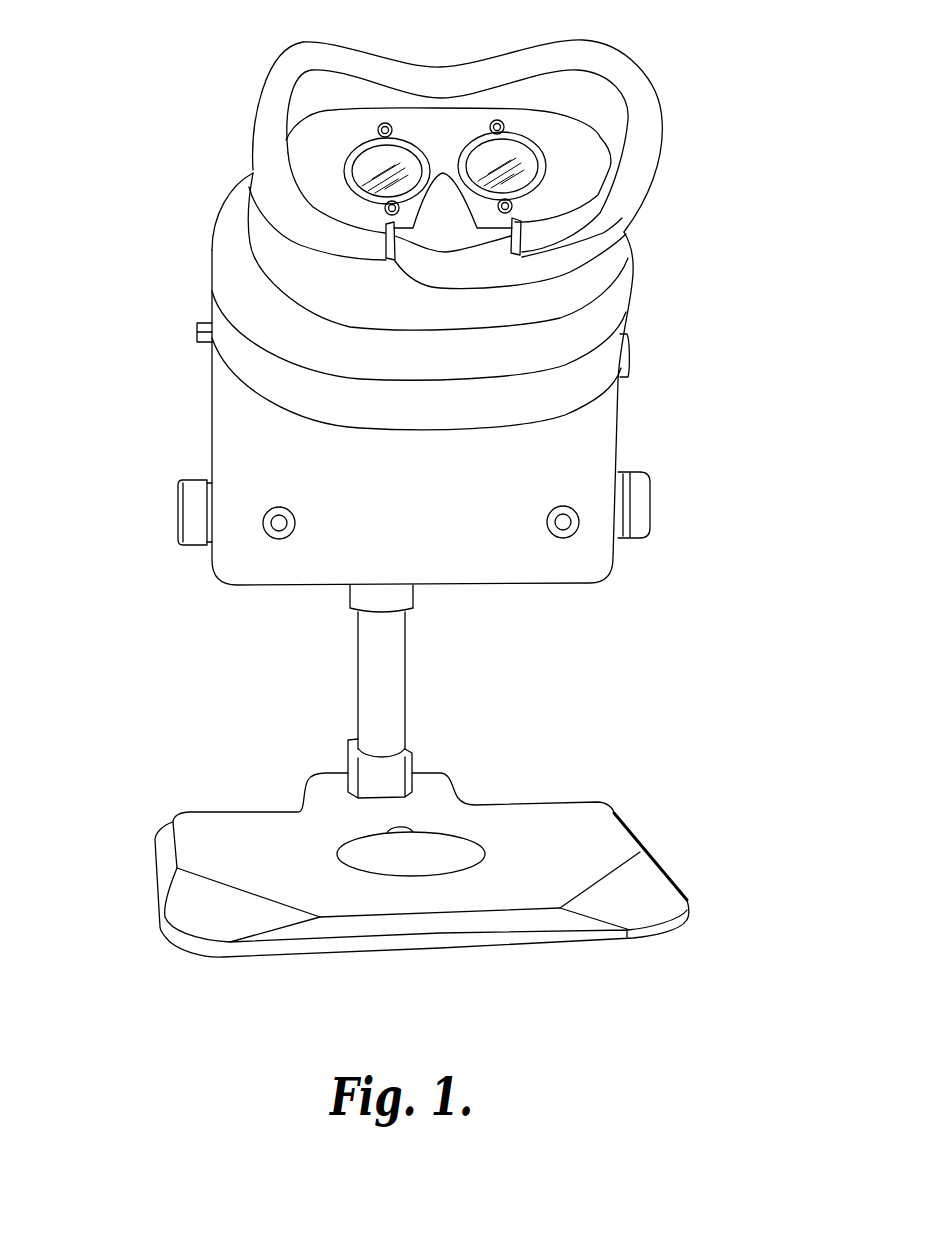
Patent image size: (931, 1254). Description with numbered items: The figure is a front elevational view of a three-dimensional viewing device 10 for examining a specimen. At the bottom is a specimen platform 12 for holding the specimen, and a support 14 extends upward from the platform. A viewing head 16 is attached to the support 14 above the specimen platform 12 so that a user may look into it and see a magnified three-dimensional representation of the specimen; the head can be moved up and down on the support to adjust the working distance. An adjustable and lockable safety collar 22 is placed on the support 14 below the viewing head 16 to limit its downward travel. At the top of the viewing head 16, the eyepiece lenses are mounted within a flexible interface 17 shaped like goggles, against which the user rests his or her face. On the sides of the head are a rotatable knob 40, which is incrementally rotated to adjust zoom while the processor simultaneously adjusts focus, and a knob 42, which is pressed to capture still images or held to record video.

The viewing device 10 is at (714, 299).
The specimen platform 12 is at (603, 828).
The support 14 is at (395, 668).
The viewing head 16 is at (176, 239).
The flexible interface 17 is at (648, 68).
The safety collar 22 is at (357, 602).
The rotatable knob 40 is at (192, 502).
The knob 42 is at (647, 493).